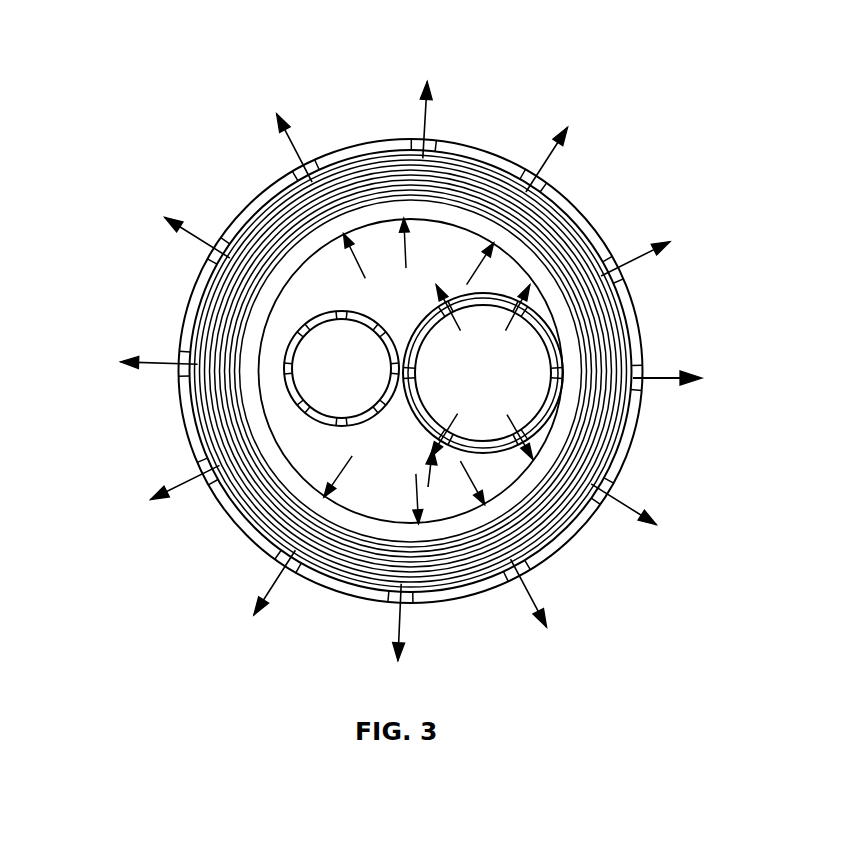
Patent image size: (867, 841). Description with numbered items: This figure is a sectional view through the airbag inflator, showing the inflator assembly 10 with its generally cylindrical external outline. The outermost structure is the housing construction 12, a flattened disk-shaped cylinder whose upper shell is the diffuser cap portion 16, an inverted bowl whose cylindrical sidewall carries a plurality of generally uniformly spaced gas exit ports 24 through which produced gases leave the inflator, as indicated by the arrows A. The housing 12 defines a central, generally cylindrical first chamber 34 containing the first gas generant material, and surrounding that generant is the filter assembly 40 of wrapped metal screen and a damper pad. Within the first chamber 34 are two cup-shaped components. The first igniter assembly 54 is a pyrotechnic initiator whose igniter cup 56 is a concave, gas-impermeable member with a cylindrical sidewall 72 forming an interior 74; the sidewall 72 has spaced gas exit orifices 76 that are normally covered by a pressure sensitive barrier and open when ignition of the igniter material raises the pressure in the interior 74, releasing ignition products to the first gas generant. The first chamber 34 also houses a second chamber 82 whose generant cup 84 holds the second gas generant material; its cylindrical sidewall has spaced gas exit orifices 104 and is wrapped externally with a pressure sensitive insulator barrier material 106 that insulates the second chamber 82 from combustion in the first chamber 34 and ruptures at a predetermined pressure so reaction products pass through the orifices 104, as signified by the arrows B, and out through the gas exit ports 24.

The inflator assembly 10 is at (617, 93).
The housing construction 12 is at (590, 208).
The diffuser cap portion 16 is at (628, 448).
The gas exit ports 24 is at (640, 355).
The first chamber 34 is at (387, 250).
The filter assembly 40 is at (608, 307).
The first igniter assembly 54 is at (320, 393).
The igniter cup 56 is at (335, 313).
The cylindrical sidewall 72 is at (295, 332).
The interior 74 is at (313, 362).
The gas exit orifices 76 is at (373, 418).
The second chamber 82 is at (540, 517).
The generant cup 84 is at (468, 296).
The gas exit orifices 104 is at (552, 391).
The insulator barrier material 106 is at (415, 423).